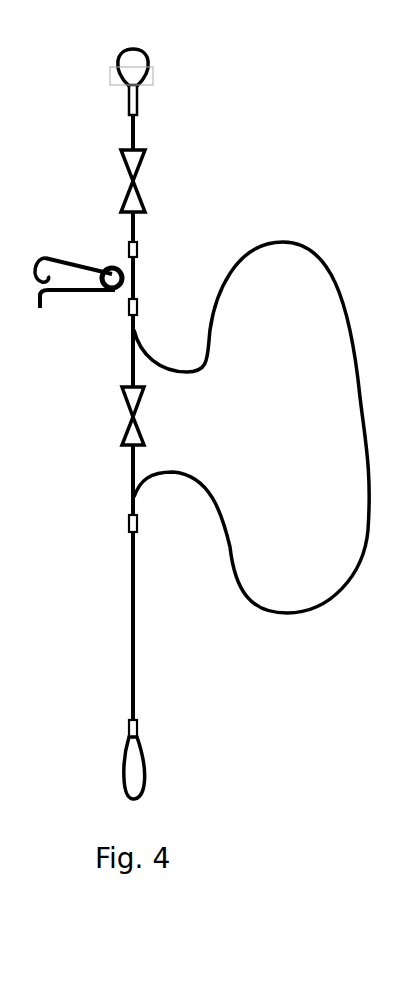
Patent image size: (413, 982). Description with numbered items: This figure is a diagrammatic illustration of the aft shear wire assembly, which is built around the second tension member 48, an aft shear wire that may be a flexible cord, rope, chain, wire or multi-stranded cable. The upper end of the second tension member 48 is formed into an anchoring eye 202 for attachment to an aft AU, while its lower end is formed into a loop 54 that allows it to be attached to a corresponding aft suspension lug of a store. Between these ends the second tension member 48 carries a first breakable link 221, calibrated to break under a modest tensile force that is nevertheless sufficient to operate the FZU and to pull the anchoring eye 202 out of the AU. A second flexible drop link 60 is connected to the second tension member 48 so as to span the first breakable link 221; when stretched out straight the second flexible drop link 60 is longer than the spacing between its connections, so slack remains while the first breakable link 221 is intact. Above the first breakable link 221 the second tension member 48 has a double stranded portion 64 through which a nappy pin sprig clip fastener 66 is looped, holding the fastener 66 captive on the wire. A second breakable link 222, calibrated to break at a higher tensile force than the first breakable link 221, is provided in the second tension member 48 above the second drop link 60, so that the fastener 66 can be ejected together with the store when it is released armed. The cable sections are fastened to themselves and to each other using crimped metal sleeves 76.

The second tension member 48 is at (130, 672).
The anchoring eye 202 is at (146, 52).
The second breakable link 222 is at (141, 167).
The crimped metal sleeve 76 is at (130, 250).
The nappy pin sprig clip fastener 66 is at (56, 257).
The double stranded portion 64 is at (138, 288).
The first breakable link 221 is at (140, 415).
The second flexible drop link 60 is at (368, 492).
The loop 54 is at (147, 787).